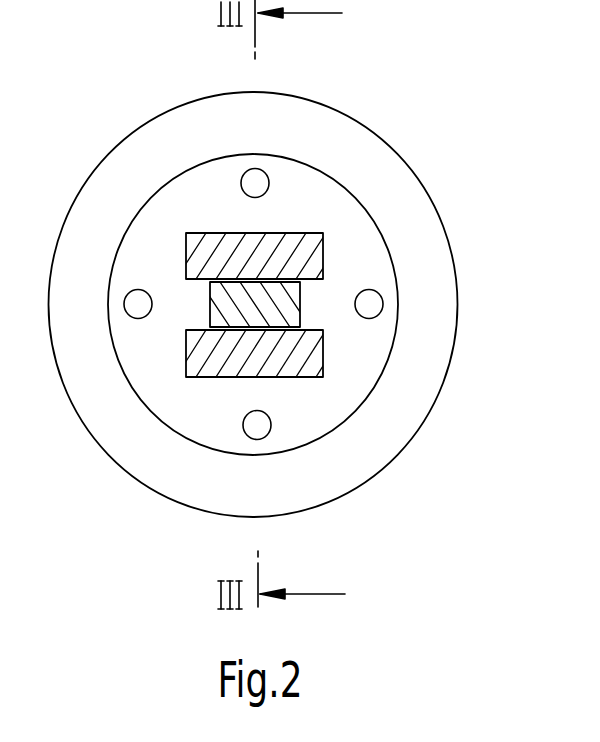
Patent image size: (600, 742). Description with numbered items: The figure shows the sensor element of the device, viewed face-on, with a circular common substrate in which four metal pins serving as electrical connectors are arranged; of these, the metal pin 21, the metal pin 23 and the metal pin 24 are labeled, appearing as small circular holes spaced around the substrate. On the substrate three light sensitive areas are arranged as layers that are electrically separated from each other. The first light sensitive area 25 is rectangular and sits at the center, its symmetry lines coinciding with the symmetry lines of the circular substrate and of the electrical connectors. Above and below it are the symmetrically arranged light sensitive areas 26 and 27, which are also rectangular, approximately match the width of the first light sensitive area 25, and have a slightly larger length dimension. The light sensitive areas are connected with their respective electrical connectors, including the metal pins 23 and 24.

The metal pin 21 is at (126, 303).
The metal pin 23 is at (378, 297).
The metal pin 24 is at (255, 173).
The first light sensitive area 25 is at (220, 297).
The light sensitive area 26 is at (268, 237).
The light sensitive area 27 is at (253, 370).